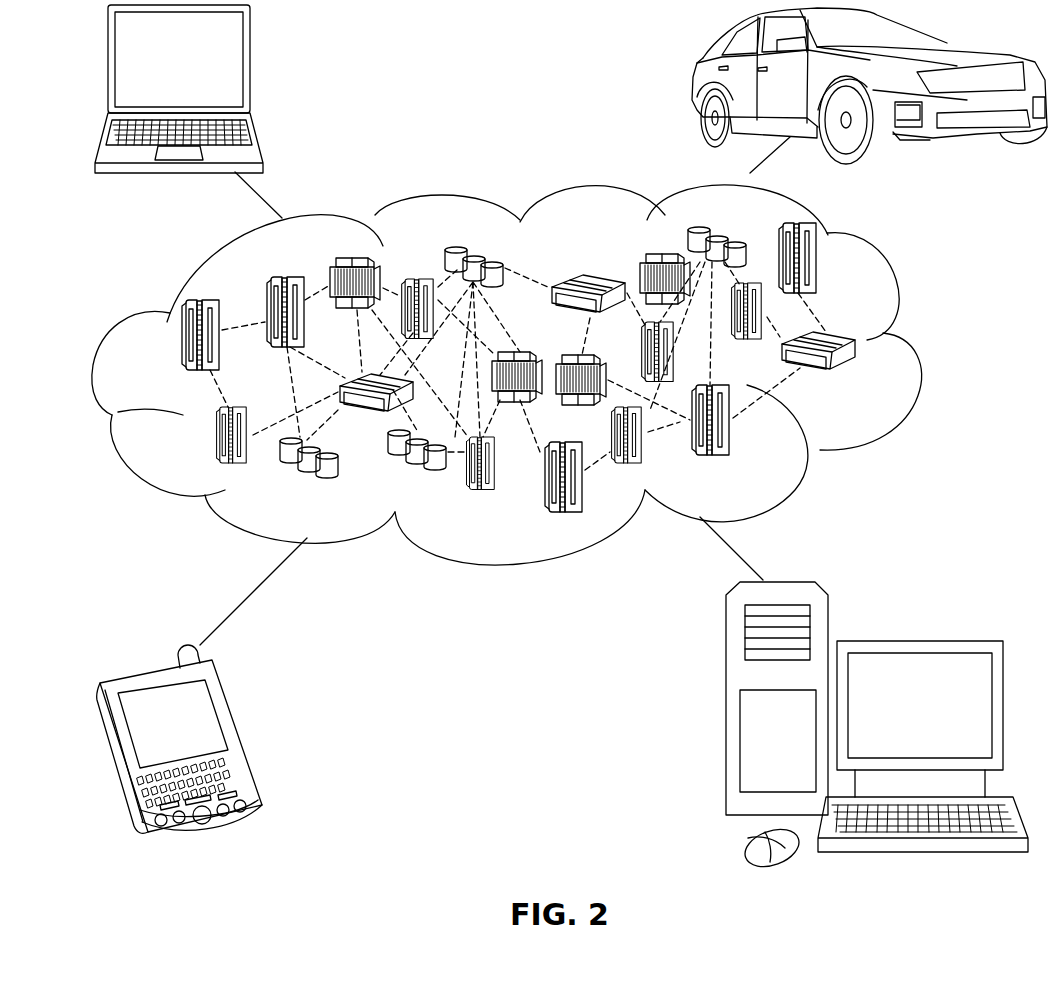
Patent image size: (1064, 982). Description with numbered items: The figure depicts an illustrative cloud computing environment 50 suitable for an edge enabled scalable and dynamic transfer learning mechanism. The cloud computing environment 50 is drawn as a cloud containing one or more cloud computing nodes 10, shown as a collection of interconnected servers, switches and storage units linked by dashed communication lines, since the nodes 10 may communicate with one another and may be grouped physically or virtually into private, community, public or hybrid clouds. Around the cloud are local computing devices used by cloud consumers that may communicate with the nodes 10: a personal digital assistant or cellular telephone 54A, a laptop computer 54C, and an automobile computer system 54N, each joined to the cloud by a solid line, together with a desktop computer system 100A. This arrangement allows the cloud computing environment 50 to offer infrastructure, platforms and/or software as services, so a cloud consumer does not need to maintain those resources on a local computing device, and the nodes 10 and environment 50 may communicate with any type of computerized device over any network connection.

The cloud computing node 10 is at (866, 378).
The cloud computing environment 50 is at (912, 343).
The personal digital assistant or cellular telephone 54A is at (240, 735).
The laptop computer 54C is at (252, 68).
The automobile computer system 54N is at (697, 84).
The computer system / desktop computer 100A is at (918, 640).